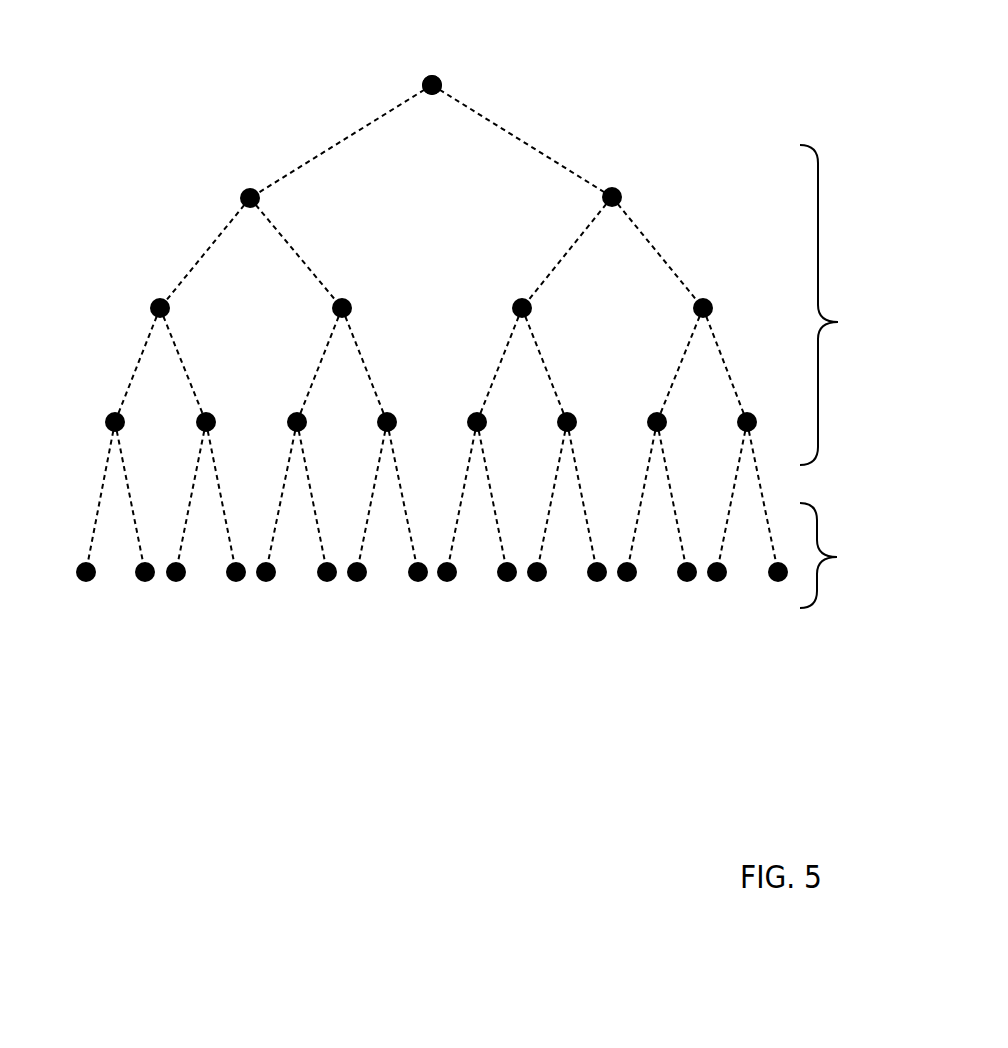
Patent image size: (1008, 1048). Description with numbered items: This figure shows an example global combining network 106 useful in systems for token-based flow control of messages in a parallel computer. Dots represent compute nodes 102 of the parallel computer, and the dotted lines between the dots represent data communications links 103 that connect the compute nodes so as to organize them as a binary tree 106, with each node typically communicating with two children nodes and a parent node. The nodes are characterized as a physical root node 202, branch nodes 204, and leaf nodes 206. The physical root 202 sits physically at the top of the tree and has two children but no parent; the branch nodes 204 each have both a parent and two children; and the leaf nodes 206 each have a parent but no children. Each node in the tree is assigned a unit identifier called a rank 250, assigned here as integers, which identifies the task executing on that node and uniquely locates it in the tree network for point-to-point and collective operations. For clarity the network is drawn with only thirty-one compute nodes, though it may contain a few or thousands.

The physical root node 202 is at (565, 56).
The data communications links 103 is at (353, 135).
The rank 250 is at (566, 207).
The branch nodes 204 is at (880, 373).
The leaf nodes 206 is at (849, 555).
The compute nodes 102 is at (503, 580).
The global combining network 106 is at (465, 409).